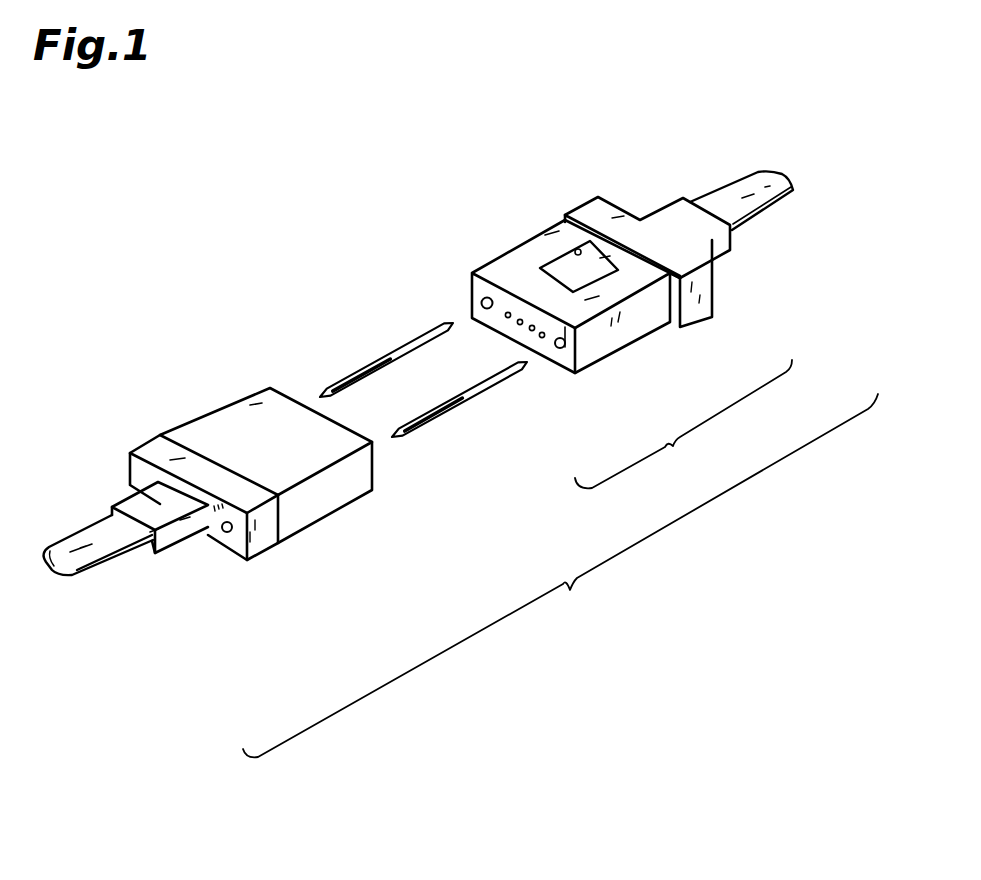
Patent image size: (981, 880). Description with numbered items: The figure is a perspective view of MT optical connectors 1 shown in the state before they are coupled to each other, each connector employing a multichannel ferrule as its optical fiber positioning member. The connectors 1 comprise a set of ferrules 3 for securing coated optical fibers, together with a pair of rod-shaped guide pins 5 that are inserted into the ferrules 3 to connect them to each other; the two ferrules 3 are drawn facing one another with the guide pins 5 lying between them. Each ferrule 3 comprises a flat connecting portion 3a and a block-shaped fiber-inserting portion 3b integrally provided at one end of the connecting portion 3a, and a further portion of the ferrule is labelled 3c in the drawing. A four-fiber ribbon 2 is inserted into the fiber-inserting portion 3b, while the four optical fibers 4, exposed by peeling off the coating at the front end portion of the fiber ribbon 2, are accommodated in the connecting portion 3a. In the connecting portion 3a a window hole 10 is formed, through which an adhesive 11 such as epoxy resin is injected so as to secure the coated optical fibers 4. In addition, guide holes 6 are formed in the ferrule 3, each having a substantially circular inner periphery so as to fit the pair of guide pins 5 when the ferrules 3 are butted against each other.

The MT optical connector 1 is at (383, 244).
The fiber ribbon 2 is at (112, 542).
The ferrule 3 is at (346, 509).
The connecting portion 3a is at (635, 333).
The fiber-inserting portion 3b is at (693, 307).
The housing bottom portion 3c is at (567, 365).
The optical fibers 4 is at (541, 338).
The guide pins 5 is at (452, 393).
The guide holes 6 is at (558, 338).
The window hole 10 is at (575, 250).
The adhesive 11 is at (592, 268).